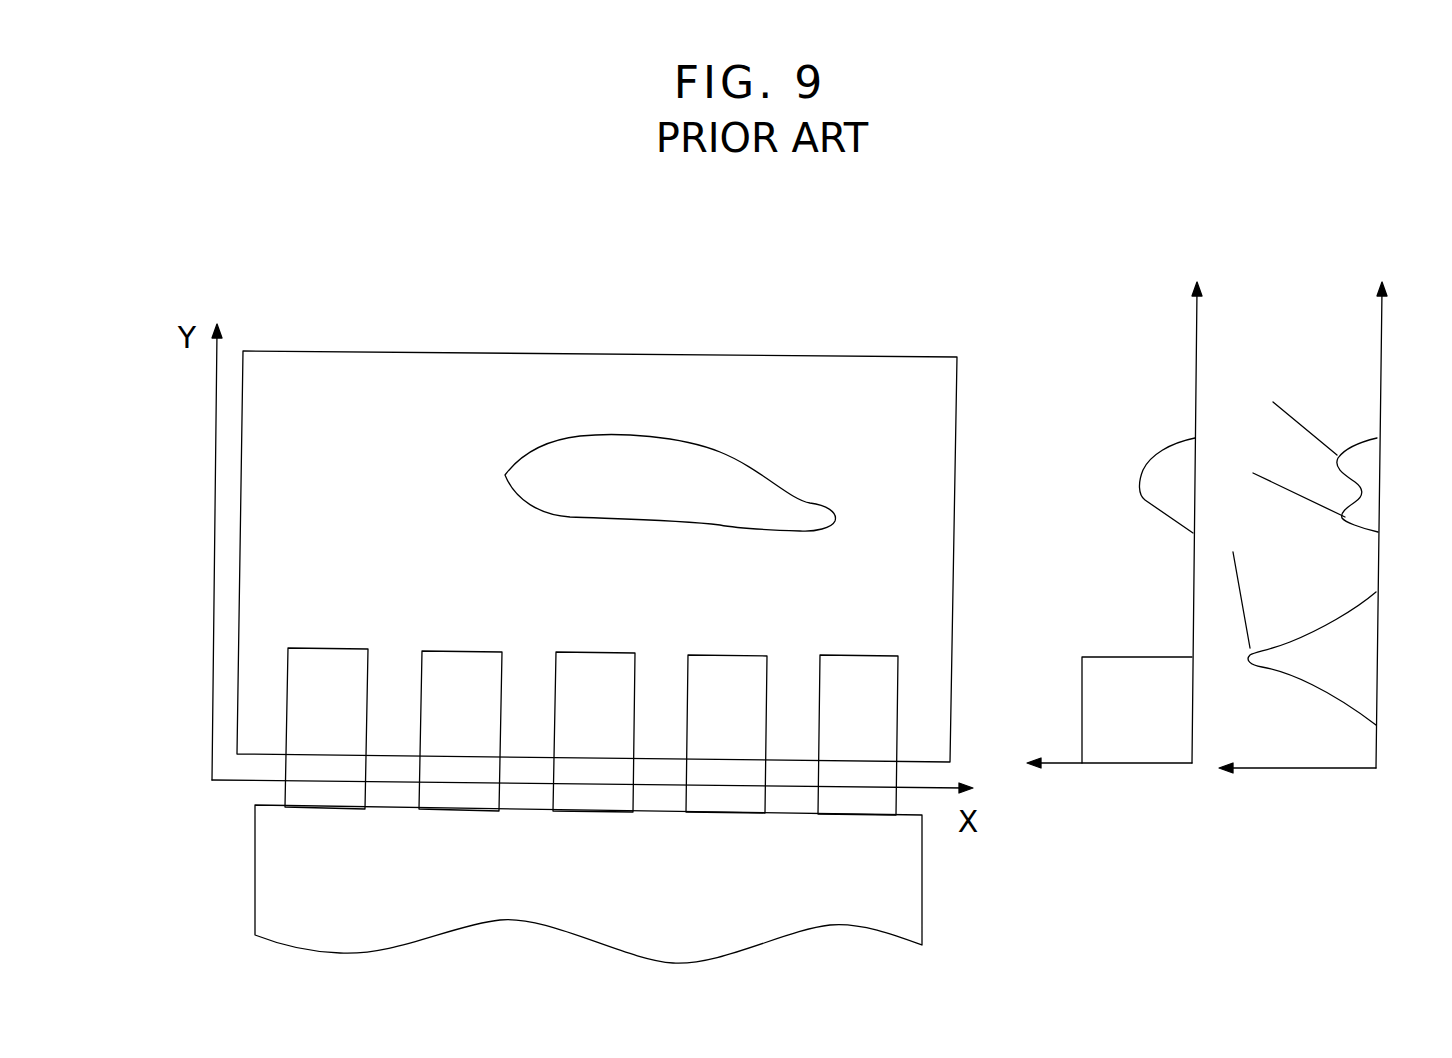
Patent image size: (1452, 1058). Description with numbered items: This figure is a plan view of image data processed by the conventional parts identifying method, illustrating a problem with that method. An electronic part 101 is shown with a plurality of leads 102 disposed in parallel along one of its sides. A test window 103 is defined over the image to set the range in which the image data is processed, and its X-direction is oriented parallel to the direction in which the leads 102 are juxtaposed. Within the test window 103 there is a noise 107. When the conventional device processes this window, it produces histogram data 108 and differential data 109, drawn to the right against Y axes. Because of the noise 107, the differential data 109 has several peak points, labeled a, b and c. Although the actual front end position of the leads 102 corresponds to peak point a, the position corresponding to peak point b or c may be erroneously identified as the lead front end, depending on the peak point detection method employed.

The electronic part 101 is at (867, 897).
The leads 102 is at (608, 705).
The test window 103 is at (763, 411).
The noise 107 is at (595, 480).
The histogram data 108 is at (1108, 737).
The differential data 109 is at (1330, 670).